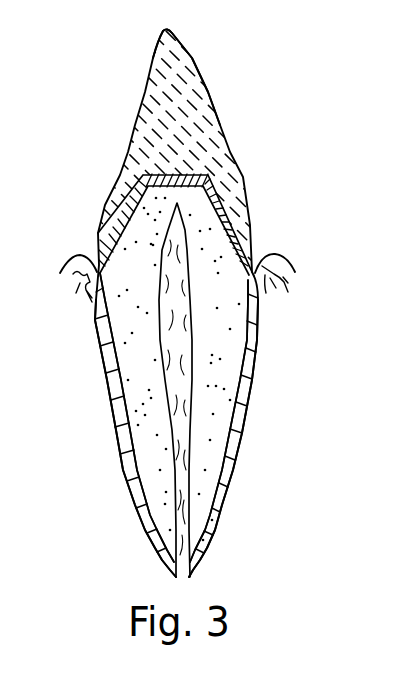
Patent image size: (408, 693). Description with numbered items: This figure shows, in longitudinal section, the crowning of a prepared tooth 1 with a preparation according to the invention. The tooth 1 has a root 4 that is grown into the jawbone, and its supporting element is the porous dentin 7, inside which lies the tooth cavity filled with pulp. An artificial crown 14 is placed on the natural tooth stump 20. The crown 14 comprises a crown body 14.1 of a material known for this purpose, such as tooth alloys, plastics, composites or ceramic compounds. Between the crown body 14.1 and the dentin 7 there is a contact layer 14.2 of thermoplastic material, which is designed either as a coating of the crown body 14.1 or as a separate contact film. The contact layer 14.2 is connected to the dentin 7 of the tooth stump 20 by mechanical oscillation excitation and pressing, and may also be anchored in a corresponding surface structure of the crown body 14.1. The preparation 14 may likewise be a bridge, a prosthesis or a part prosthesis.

The tooth 1 is at (108, 166).
The artificial crown 14 is at (203, 58).
The crown body 14.1 is at (195, 112).
The contact layer 14.2 is at (207, 186).
The natural tooth stump 20 is at (148, 233).
The dentin 7 is at (222, 355).
The root 4 is at (105, 433).